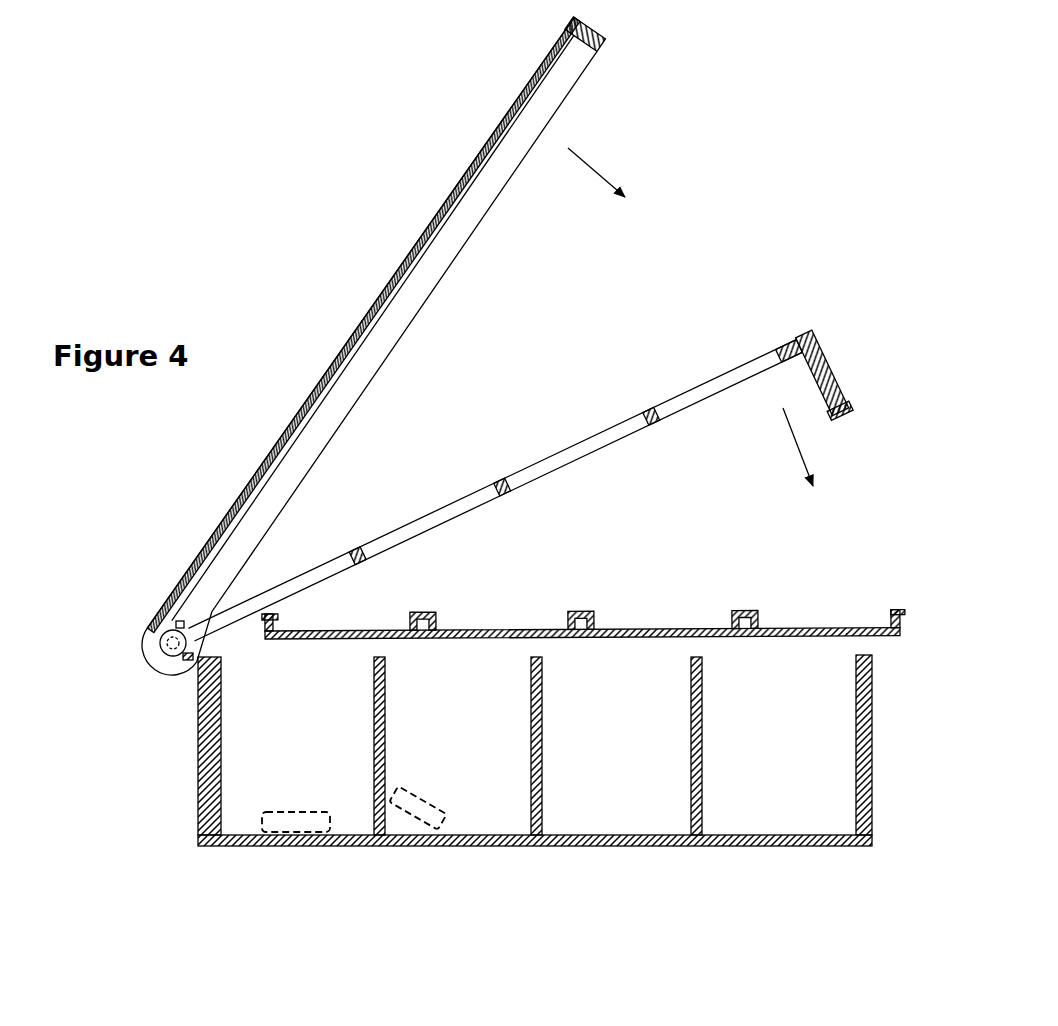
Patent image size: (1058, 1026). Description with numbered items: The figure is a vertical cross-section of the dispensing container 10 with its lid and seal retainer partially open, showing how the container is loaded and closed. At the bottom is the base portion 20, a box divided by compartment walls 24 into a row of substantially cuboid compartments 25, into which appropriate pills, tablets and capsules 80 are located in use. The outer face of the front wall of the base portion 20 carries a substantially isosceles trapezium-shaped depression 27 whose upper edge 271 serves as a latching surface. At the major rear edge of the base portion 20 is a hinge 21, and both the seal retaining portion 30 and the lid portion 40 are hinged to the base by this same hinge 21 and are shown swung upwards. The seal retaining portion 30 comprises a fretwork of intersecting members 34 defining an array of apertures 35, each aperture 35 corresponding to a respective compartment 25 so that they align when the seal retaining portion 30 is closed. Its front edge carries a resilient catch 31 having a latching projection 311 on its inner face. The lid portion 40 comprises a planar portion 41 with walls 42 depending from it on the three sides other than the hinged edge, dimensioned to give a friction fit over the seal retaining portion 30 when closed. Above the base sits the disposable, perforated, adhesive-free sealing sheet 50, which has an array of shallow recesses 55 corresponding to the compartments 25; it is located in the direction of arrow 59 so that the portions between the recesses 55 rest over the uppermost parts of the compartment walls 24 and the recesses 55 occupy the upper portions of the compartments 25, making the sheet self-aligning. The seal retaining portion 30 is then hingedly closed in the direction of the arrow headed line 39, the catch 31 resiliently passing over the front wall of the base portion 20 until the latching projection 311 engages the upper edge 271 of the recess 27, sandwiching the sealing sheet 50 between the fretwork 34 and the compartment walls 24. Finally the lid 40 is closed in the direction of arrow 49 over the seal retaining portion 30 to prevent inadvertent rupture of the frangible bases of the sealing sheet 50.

The dispensing container 10 is at (218, 172).
The base portion 20 is at (172, 772).
The hinge 21 is at (158, 660).
The compartment walls 24 is at (530, 736).
The compartments 25 is at (782, 762).
The trapezium-shaped depression 27 is at (876, 800).
The upper edge of the recess 271 is at (873, 698).
The seal retaining portion 30 is at (655, 383).
The resilient catch 31 is at (843, 375).
The latching projection 311 is at (845, 410).
The intersecting members 34 is at (503, 486).
The apertures 35 is at (582, 442).
The arrow headed line 39 is at (792, 445).
The lid portion 40 is at (392, 229).
The planar portion 41 is at (378, 298).
The walls 42 is at (596, 40).
The arrow 49 is at (592, 168).
The sealing sheet 50 is at (812, 598).
The recesses 55 is at (665, 620).
The arrow 59 is at (240, 637).
The pills, tablets and capsules 80 is at (290, 812).